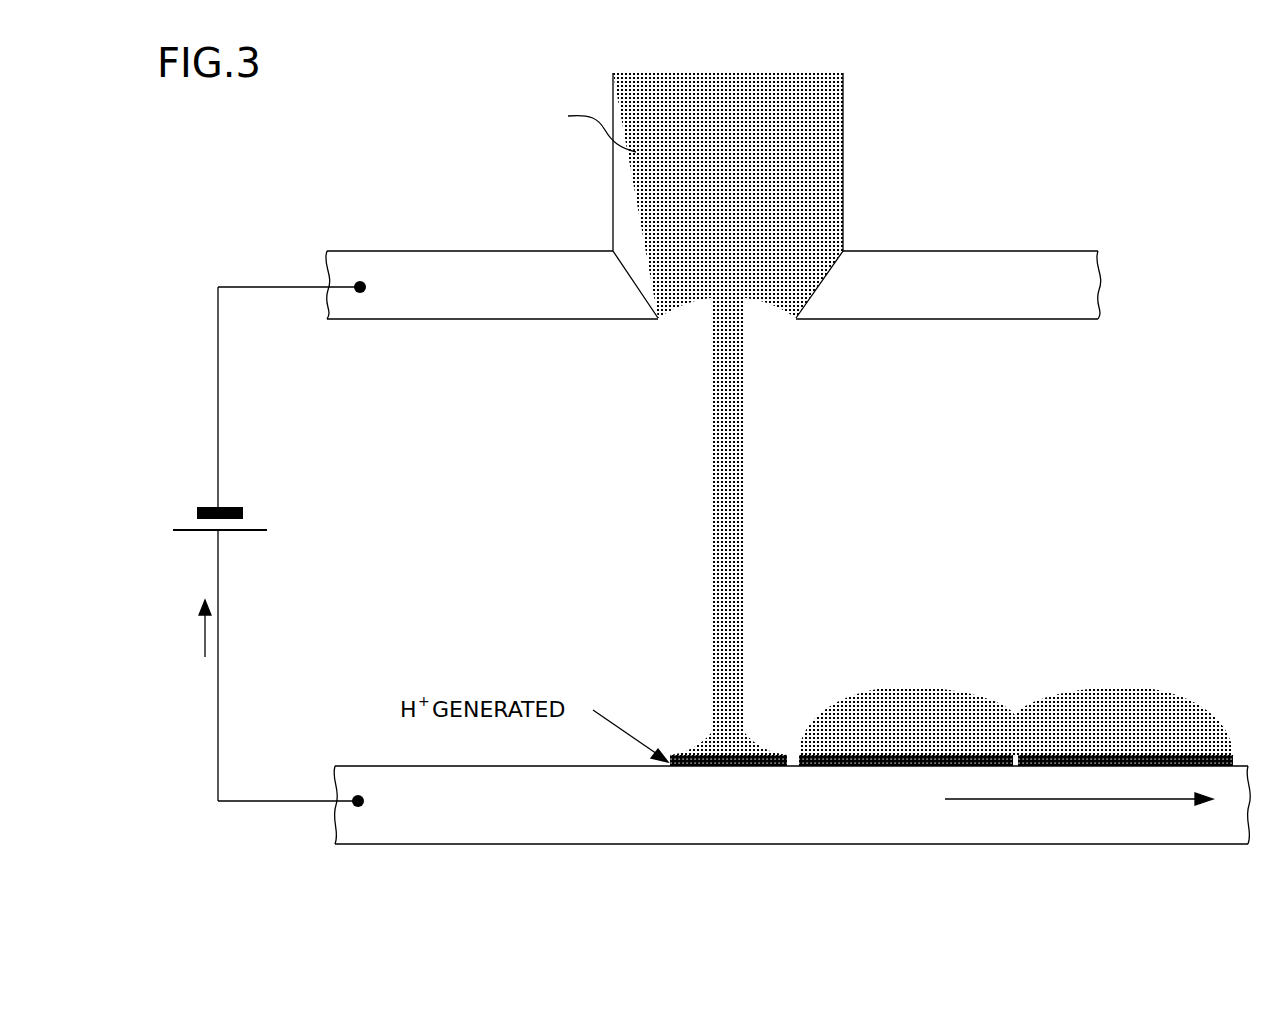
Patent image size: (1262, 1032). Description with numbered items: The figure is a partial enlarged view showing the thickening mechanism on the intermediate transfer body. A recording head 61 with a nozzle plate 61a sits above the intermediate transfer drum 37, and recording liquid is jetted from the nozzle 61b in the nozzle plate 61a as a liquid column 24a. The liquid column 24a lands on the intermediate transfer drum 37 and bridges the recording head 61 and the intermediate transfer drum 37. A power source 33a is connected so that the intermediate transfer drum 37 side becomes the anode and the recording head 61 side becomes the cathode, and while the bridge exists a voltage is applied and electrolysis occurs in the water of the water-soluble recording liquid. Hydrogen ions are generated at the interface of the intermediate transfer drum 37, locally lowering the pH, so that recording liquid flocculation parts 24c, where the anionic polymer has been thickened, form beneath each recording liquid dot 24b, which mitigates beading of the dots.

The recording head 61 is at (713, 237).
The nozzle plate 61a is at (1015, 296).
The nozzle 61b is at (700, 313).
The liquid column 24a is at (740, 508).
The recording liquid dot 24b is at (902, 690).
The recording liquid flocculation part 24c is at (878, 766).
The power source 33a is at (175, 497).
The intermediate transfer drum 37 is at (925, 832).